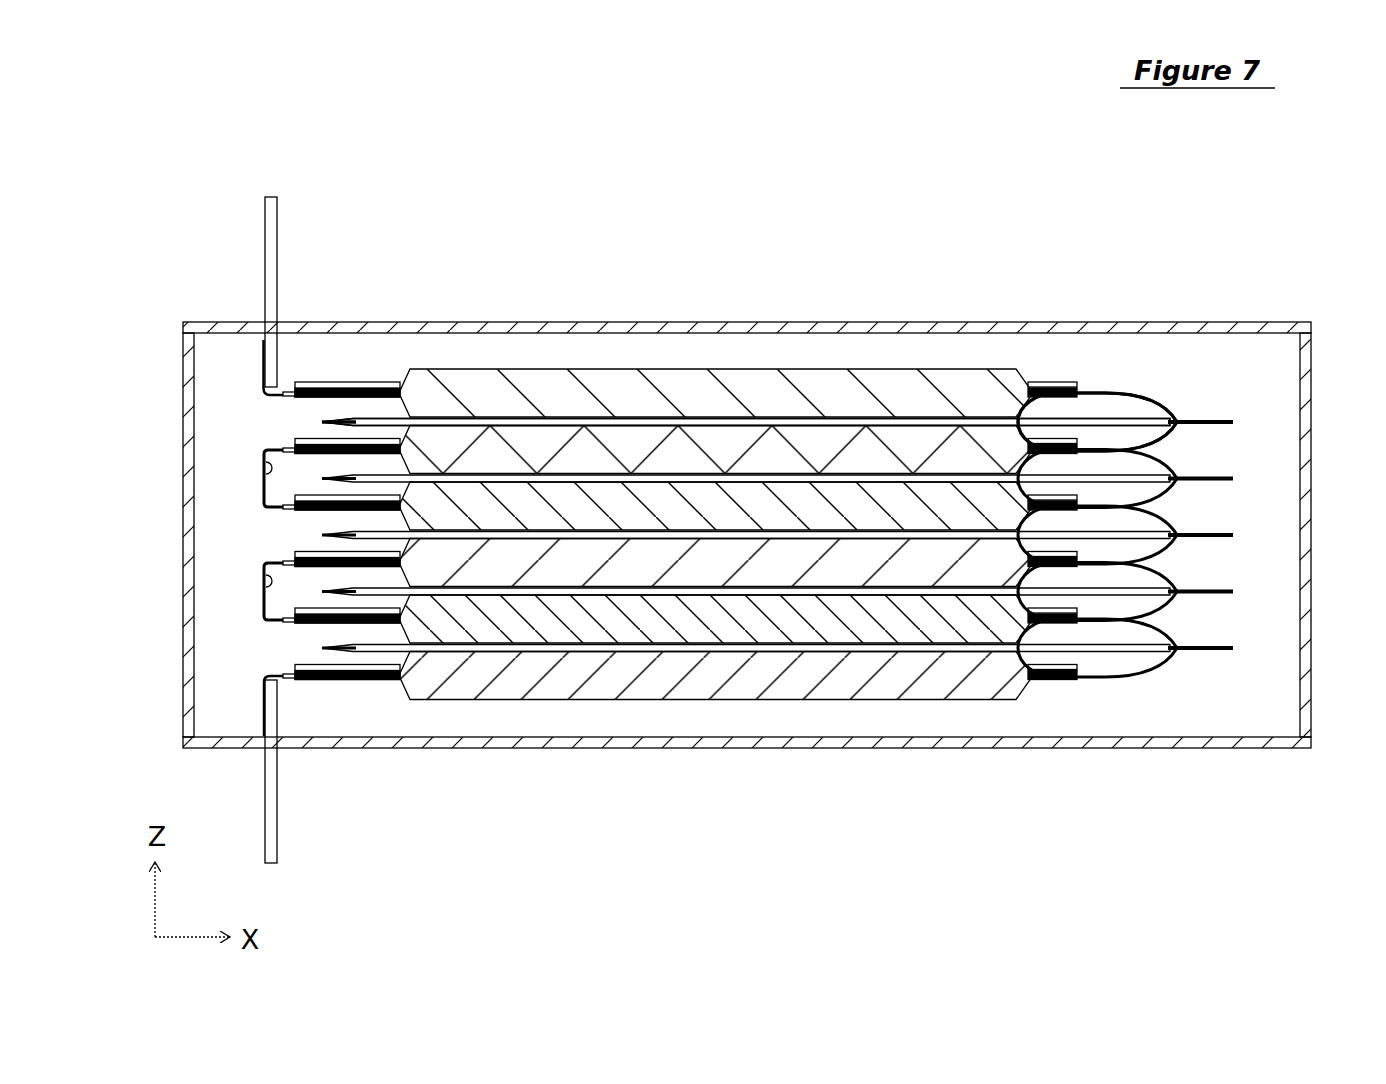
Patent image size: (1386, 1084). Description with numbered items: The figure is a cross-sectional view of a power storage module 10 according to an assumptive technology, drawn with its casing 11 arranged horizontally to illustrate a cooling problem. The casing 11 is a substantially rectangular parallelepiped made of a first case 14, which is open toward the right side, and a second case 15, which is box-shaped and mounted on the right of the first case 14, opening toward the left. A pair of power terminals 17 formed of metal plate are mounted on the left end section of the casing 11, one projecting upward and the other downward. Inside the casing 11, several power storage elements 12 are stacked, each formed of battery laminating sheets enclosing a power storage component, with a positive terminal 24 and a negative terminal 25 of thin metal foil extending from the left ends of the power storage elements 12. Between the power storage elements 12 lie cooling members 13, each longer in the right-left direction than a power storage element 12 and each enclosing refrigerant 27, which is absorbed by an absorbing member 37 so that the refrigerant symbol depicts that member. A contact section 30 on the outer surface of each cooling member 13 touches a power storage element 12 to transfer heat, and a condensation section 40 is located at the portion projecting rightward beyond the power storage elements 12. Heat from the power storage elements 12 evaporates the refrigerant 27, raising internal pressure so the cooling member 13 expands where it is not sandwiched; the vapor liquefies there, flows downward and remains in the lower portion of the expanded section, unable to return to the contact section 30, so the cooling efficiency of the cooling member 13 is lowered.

The power storage module 10 is at (1289, 192).
The casing 11 is at (1180, 320).
The power storage element 12 is at (965, 515).
The cooling member 13 is at (1230, 535).
The first case 14 is at (188, 377).
The second case 15 is at (1117, 327).
The power terminal 17 is at (278, 263).
The positive terminal 24 is at (261, 487).
The negative terminal 25 is at (262, 368).
The refrigerant 27 is at (1097, 557).
The contact section 30 is at (673, 535).
The absorbing member 37 is at (774, 420).
The condensation section 40 is at (1080, 390).